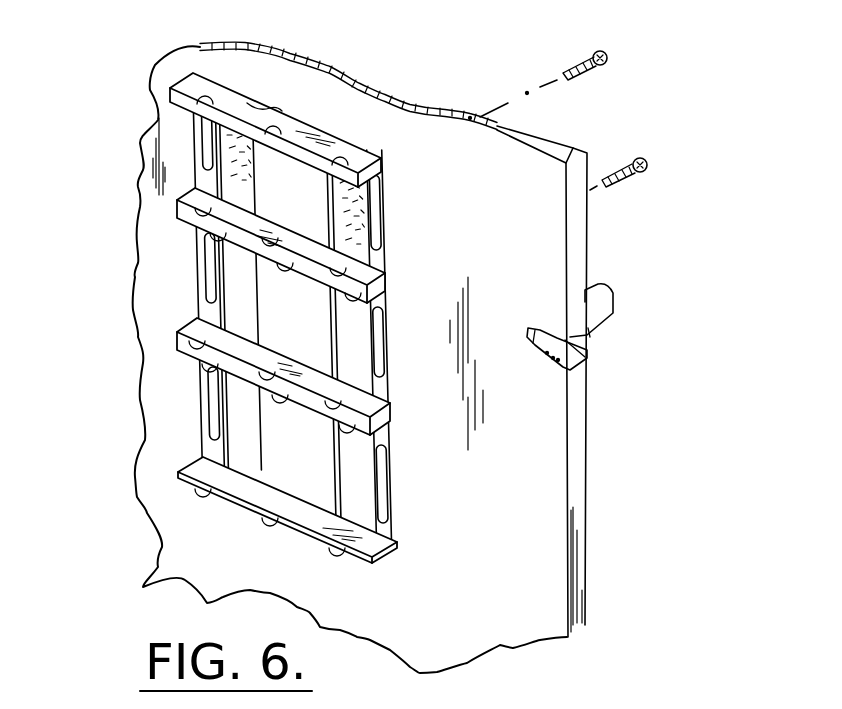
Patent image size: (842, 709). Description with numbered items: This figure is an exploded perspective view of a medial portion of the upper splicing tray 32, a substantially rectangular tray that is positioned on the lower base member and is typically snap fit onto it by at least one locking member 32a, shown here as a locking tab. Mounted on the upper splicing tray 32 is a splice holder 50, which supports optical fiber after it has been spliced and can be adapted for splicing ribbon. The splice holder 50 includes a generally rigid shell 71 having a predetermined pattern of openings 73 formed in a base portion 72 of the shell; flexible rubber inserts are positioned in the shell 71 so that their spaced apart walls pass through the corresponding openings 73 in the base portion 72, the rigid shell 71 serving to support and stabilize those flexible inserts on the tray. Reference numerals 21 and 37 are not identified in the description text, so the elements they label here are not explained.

The panel 21 is at (610, 555).
The upper splicing tray 32 is at (545, 268).
The locking member 32a is at (603, 302).
The screws 37 is at (596, 50).
The splice holder 50 is at (172, 277).
The rigid shell 71 is at (403, 208).
The base portion 72 is at (400, 508).
The openings 73 is at (245, 103).